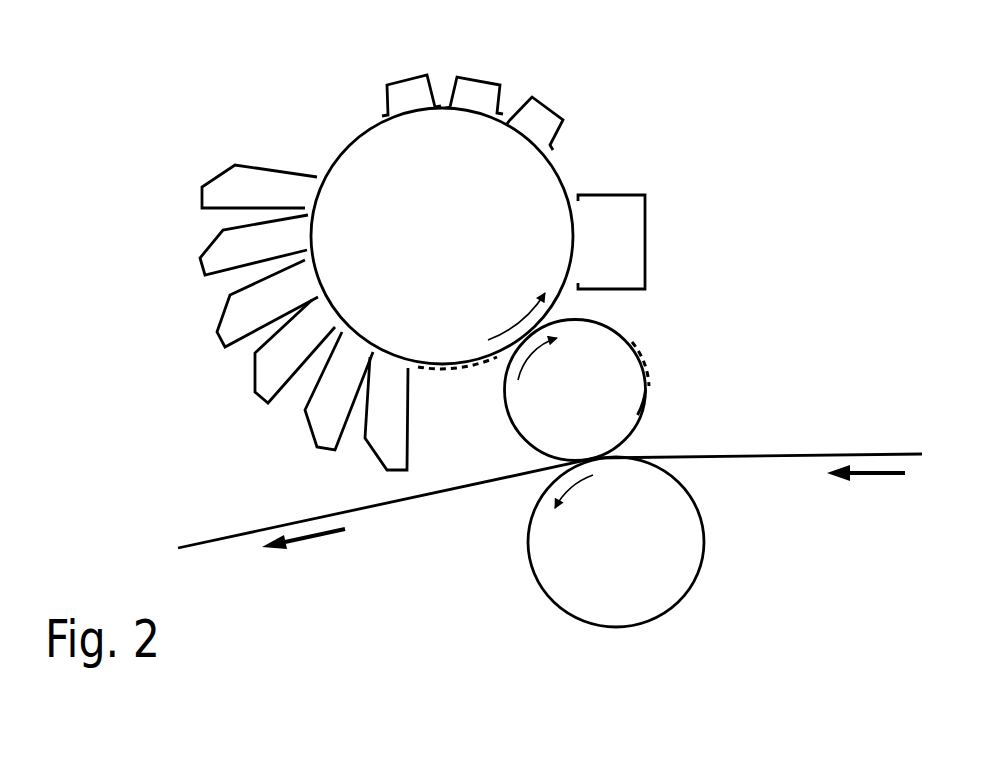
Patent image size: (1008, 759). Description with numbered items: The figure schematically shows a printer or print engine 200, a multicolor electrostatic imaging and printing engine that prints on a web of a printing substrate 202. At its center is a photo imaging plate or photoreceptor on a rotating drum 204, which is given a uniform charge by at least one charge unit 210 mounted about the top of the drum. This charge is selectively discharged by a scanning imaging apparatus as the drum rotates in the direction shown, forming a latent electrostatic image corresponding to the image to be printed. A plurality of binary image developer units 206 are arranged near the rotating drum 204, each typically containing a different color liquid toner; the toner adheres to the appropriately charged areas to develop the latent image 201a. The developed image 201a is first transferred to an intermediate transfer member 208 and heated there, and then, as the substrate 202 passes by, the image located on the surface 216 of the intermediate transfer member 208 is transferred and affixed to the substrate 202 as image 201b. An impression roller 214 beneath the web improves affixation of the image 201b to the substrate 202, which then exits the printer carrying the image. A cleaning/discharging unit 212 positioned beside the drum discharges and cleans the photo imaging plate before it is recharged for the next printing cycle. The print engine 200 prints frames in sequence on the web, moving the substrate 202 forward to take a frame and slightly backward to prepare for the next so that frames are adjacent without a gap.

The printer or print engine 200 is at (259, 63).
The latent image 201a is at (462, 377).
The image 201b is at (648, 353).
The printing substrate 202 is at (447, 493).
The photo imaging plate on rotating drum 204 is at (522, 188).
The binary image developer 206 is at (372, 465).
The intermediate transfer member 208 is at (618, 380).
The charge unit 210 is at (487, 65).
The cleaning/discharging unit 212 is at (632, 277).
The impression roller 214 is at (662, 542).
The surface 216 is at (647, 412).